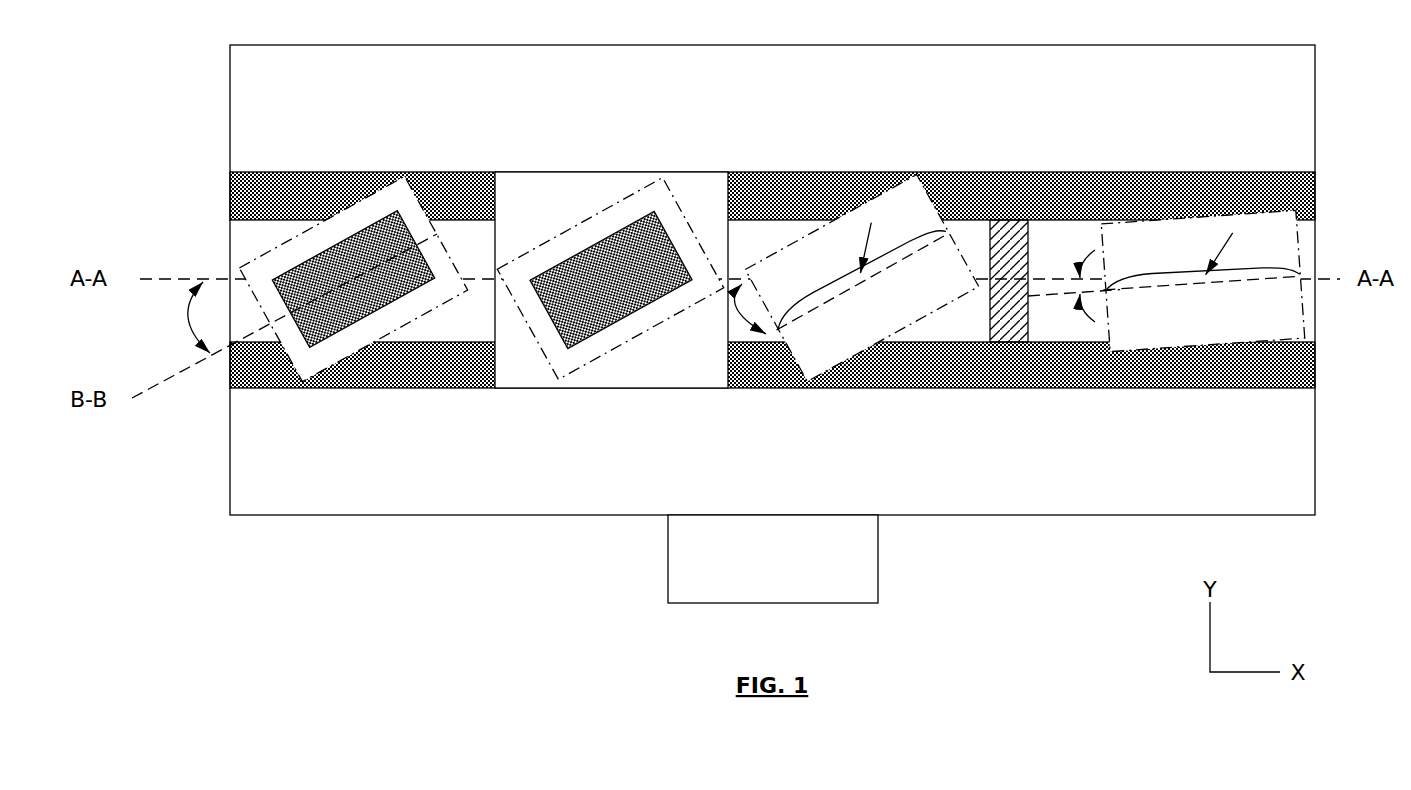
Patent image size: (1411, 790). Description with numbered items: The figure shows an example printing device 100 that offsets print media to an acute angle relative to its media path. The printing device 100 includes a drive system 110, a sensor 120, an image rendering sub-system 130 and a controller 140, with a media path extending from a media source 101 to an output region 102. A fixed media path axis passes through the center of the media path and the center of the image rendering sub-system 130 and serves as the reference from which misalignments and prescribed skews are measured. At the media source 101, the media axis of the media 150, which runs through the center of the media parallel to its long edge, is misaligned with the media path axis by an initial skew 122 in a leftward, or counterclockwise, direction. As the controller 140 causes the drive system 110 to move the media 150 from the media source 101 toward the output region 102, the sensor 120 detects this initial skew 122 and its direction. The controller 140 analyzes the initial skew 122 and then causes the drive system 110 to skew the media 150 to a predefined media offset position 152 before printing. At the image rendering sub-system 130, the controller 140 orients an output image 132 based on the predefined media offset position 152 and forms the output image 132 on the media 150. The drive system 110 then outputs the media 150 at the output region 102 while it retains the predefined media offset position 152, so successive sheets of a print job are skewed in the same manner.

The printing device 100 is at (772, 280).
The media source 101 is at (1137, 407).
The output region 102 is at (398, 407).
The drive system 110 is at (772, 280).
The sensor 120 is at (1013, 245).
The initial skew 122 is at (1073, 283).
The image rendering sub-system 130 is at (552, 200).
The output image 132 is at (482, 280).
The controller 140 is at (773, 559).
The media 150 is at (771, 279).
The predefined media offset position 152 is at (770, 405).